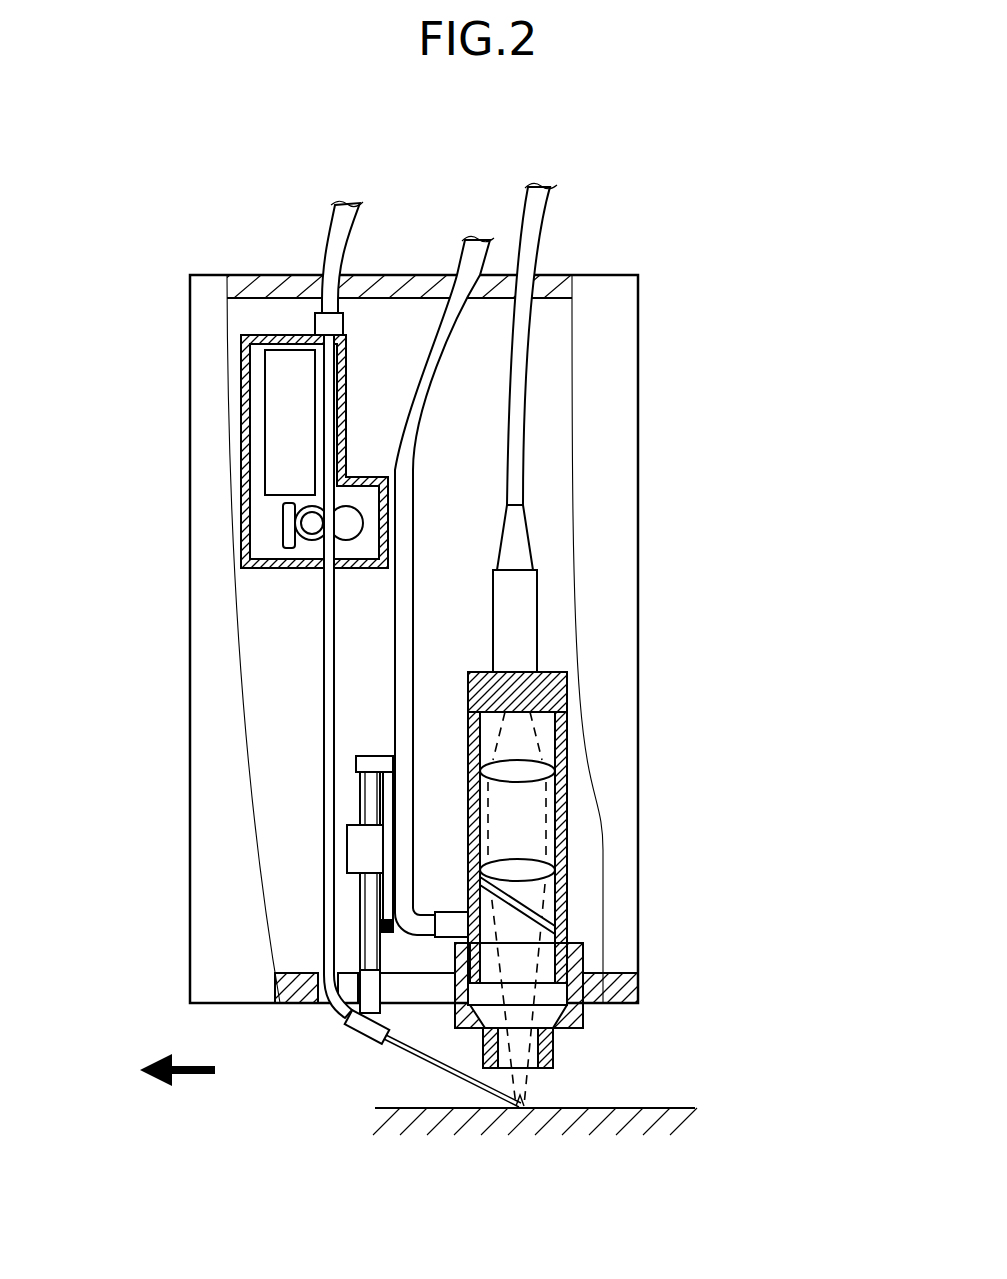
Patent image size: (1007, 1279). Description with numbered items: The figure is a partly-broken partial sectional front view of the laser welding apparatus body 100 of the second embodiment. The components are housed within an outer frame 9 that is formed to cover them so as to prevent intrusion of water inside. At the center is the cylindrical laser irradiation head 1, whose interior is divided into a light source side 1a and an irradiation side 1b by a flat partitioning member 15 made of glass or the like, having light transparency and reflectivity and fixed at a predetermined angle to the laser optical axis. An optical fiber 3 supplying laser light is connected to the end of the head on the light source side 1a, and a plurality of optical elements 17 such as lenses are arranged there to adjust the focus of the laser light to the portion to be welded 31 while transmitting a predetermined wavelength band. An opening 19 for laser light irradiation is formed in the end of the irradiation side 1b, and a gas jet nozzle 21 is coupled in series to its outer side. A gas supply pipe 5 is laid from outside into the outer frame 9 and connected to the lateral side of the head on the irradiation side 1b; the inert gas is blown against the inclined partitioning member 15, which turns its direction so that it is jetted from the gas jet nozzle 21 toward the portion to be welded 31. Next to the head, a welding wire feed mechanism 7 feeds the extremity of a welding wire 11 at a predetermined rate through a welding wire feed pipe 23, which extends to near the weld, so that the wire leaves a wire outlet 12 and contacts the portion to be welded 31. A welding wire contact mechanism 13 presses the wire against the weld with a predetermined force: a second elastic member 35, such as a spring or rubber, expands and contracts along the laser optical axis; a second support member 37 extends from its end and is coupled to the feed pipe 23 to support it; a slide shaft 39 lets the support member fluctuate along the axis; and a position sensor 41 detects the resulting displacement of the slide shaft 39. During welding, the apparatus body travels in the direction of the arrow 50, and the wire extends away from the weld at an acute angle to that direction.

The laser welding apparatus body 100 is at (616, 237).
The outer frame 9 is at (640, 297).
The welding wire feed mechanism 7 is at (241, 400).
The gas supply pipe 5 is at (468, 275).
The optical fiber 3 is at (518, 366).
The laser irradiation head 1 is at (568, 645).
The light source side 1a is at (540, 722).
The optical elements 17 is at (535, 768).
The partitioning member 15 is at (518, 902).
The irradiation side 1b is at (540, 920).
The welding wire contact mechanism 13 is at (336, 731).
The second elastic member 35 is at (363, 800).
The slide shaft 39 is at (353, 850).
The position sensor 41 is at (382, 902).
The second support member 37 is at (368, 940).
The welding wire feed pipe 23 is at (340, 1006).
The opening 19 is at (587, 1017).
The gas jet nozzle 21 is at (555, 1058).
The portion to be welded 31 is at (528, 1104).
The wire outlet 12 is at (468, 1078).
The welding wire 11 is at (476, 1080).
The arrow 50 is at (185, 1063).